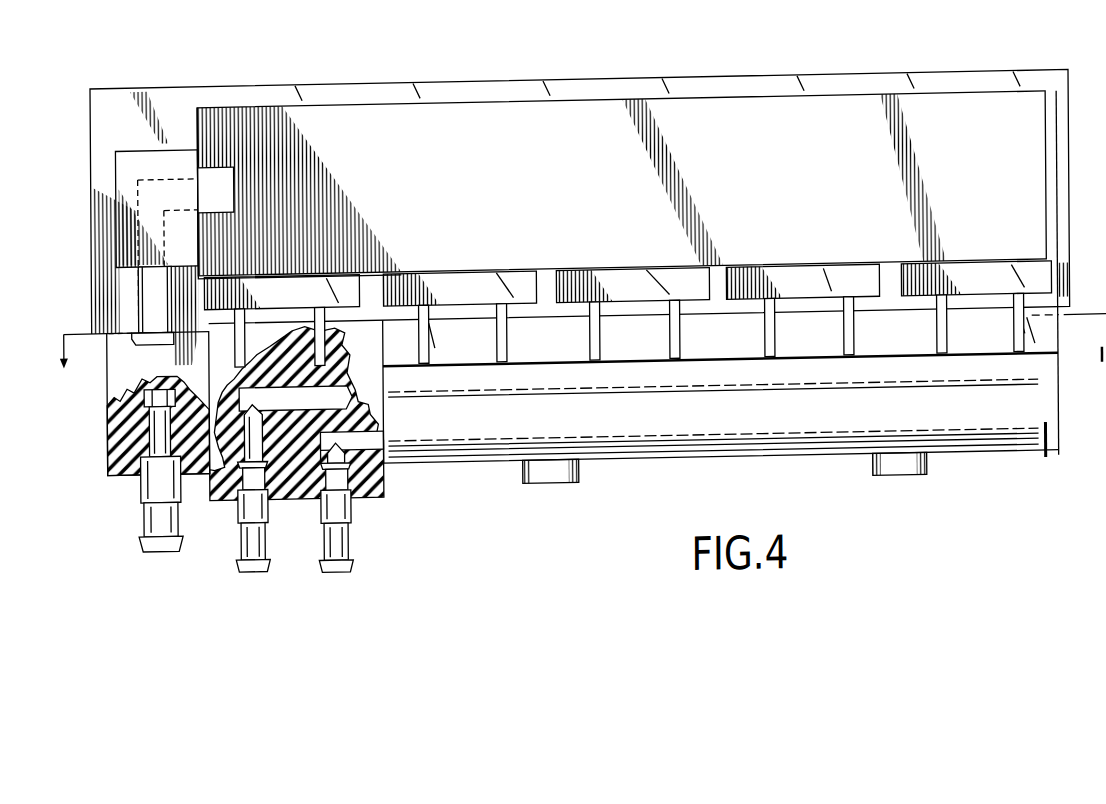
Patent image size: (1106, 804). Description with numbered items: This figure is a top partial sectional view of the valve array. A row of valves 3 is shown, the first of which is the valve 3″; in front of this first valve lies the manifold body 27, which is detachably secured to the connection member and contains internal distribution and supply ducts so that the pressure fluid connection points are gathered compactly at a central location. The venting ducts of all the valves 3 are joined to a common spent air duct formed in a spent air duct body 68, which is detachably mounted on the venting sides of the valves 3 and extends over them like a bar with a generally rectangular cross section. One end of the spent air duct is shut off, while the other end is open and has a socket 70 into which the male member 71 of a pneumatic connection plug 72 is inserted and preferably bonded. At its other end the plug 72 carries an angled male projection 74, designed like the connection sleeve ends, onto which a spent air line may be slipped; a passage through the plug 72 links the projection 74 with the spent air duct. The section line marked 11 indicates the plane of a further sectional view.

The valves 3 is at (294, 283).
The section line 11 is at (578, 352).
The manifold body 27 is at (729, 469).
The spent air duct body 68 is at (477, 206).
The socket 70 is at (237, 172).
The male member 71 is at (213, 170).
The pneumatic connection plug 72 is at (115, 165).
The male projection 74 is at (133, 298).